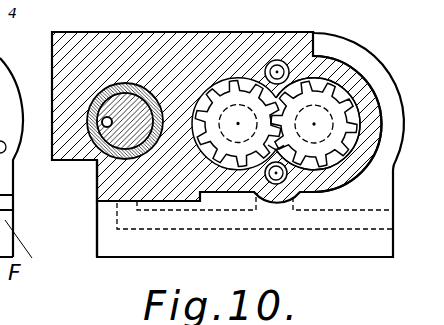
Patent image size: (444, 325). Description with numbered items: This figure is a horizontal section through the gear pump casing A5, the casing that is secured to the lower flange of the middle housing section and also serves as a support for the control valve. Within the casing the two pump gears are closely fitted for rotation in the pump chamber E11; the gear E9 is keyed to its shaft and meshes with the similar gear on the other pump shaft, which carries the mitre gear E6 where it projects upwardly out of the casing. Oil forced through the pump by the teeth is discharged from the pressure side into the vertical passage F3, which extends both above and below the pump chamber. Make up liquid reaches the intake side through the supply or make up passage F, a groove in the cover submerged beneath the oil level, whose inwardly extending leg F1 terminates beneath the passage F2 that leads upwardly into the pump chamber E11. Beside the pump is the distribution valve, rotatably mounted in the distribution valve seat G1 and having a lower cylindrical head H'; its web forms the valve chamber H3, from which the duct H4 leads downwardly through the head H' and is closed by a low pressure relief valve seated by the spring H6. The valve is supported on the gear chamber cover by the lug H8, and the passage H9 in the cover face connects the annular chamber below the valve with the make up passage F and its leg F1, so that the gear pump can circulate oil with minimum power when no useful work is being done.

The gear pump casing A5 is at (107, 47).
The lower cylindrical head H' is at (125, 83).
The mitre gear E6 is at (232, 102).
The vertical passage F3 is at (289, 62).
The pump gear E9 is at (355, 66).
The valve chamber H3 is at (96, 117).
The spring H6 is at (95, 115).
The duct H4 is at (76, 160).
The lug H8 is at (94, 164).
The distribution valve seat G1 is at (96, 205).
The passage H9 is at (149, 225).
The inwardly extending leg F1 is at (253, 194).
The passage F2 is at (276, 173).
The supply or make up passage F is at (362, 208).
The pump chamber E11 is at (275, 155).